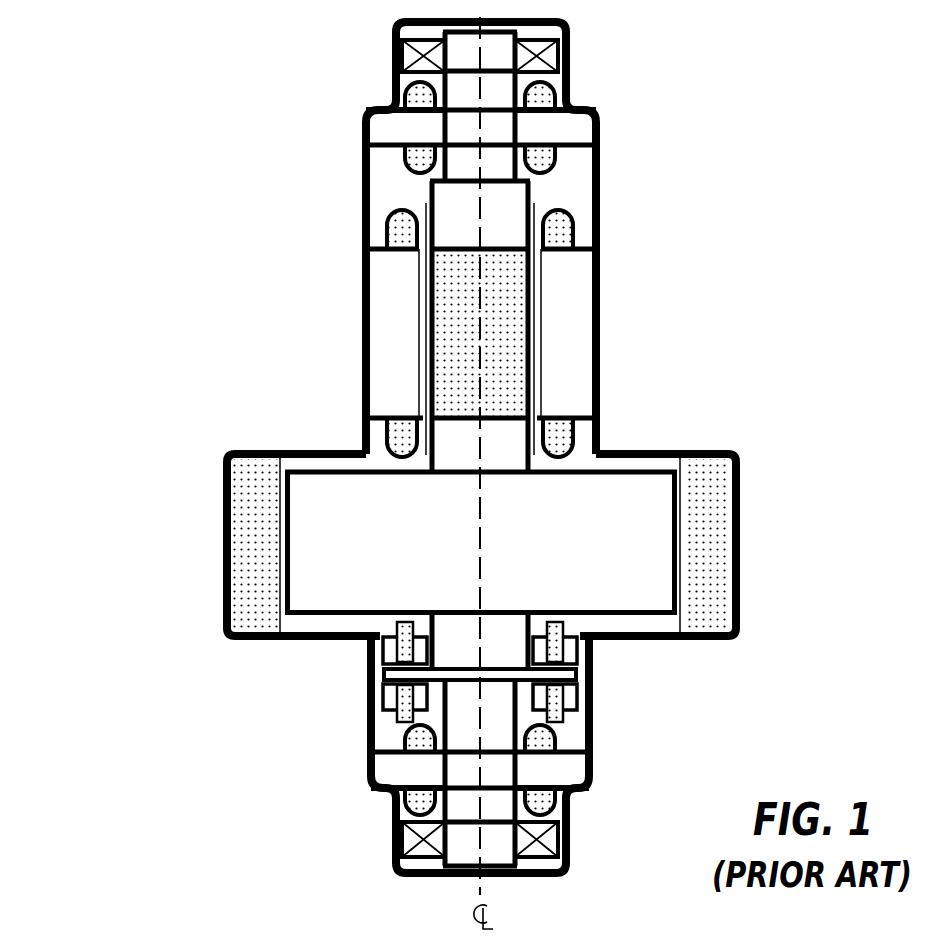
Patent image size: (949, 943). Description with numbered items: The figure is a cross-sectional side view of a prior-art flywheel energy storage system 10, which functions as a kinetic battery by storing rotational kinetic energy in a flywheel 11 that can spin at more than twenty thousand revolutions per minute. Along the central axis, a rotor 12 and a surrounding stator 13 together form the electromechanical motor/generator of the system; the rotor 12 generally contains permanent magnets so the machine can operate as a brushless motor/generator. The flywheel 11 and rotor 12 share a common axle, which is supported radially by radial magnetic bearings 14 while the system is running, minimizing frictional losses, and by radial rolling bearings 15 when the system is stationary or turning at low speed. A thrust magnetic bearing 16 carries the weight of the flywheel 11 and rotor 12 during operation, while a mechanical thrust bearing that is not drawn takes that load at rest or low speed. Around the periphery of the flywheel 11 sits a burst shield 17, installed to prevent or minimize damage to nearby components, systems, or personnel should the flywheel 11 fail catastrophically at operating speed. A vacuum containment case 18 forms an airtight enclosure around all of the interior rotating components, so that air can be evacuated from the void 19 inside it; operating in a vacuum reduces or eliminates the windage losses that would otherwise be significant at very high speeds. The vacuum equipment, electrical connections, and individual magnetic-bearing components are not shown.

The flywheel energy storage system 10 is at (188, 132).
The flywheel 11 is at (600, 510).
The rotor 12 is at (492, 387).
The stator 13 is at (563, 292).
The radial magnetic bearings 14 is at (563, 135).
The radial rolling bearings 15 is at (568, 63).
The thrust magnetic bearing 16 is at (380, 672).
The burst shield 17 is at (250, 483).
The vacuum containment case 18 is at (322, 450).
The void 19 is at (366, 453).